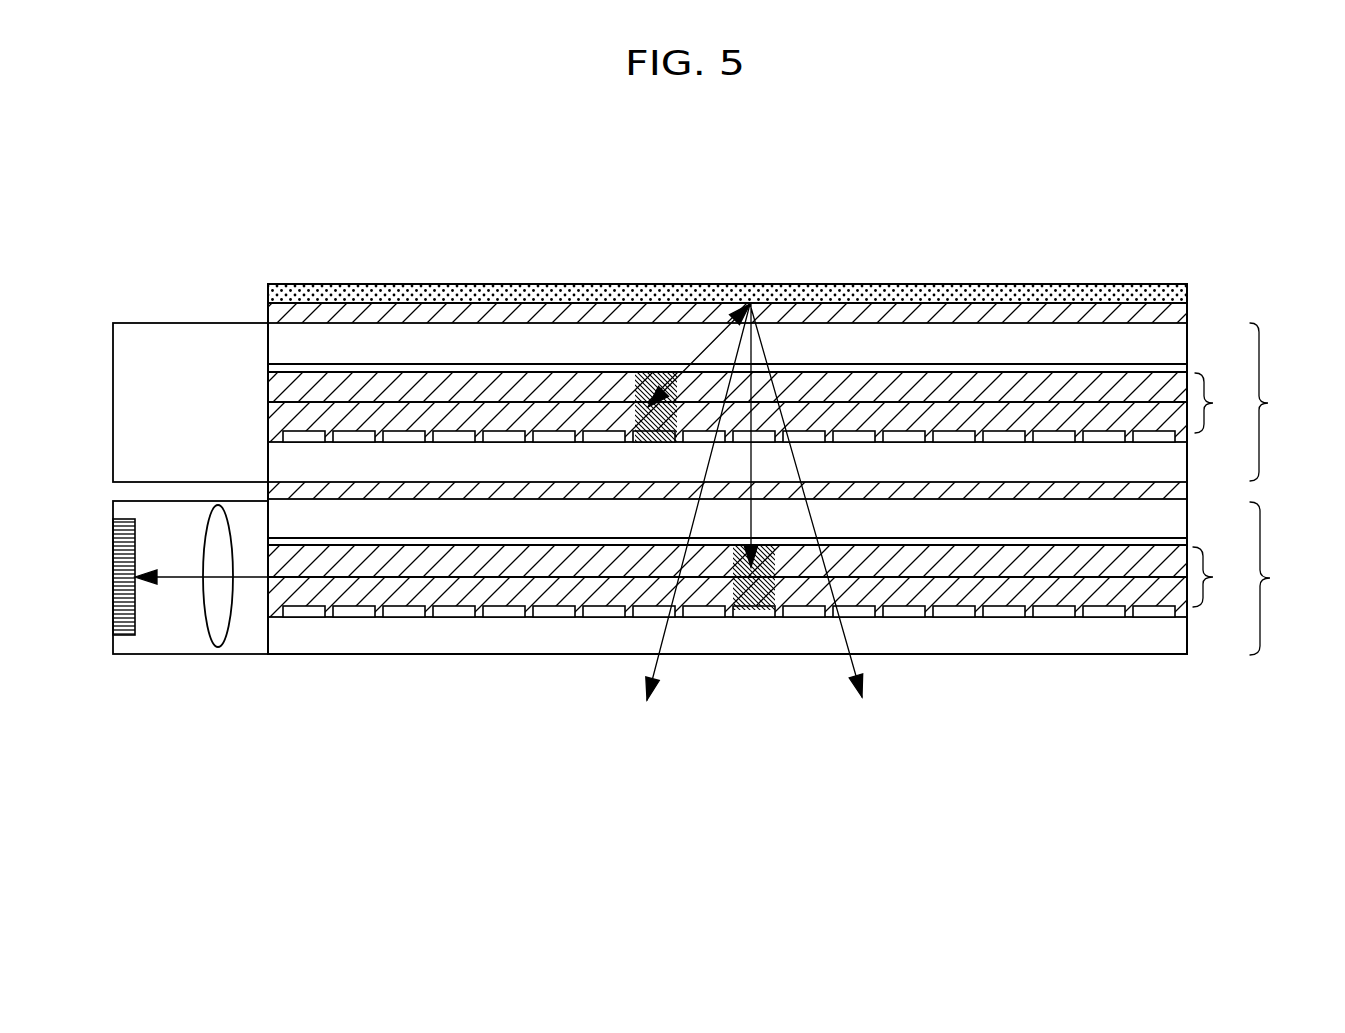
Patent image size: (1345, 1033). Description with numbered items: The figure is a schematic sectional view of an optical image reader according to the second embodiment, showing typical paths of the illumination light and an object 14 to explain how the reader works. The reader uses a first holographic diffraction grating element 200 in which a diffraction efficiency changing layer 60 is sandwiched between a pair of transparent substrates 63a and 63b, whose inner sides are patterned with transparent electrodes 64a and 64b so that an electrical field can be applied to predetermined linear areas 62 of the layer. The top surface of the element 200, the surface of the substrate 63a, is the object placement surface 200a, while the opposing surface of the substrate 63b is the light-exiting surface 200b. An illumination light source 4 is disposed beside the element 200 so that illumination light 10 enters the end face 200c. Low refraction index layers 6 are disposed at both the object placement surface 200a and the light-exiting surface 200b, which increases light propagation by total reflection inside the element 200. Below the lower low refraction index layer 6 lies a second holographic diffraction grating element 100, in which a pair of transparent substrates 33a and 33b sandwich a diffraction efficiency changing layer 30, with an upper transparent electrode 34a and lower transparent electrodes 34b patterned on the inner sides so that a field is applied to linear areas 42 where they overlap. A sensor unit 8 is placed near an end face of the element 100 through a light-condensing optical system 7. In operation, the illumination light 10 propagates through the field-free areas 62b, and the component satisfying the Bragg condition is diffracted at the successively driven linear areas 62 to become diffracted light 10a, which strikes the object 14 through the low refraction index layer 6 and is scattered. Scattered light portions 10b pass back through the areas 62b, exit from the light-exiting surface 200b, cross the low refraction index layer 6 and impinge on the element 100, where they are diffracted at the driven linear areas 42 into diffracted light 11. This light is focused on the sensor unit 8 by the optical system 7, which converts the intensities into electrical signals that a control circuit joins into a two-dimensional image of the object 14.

The illumination light source 4 is at (137, 398).
The low refraction index layer 6 is at (1175, 311).
The light-condensing optical system 7 is at (216, 626).
The sensor unit 8 is at (120, 575).
The illumination light 10 is at (351, 403).
The diffracted light 10a is at (710, 343).
The scattered light portions 10b is at (765, 347).
The diffracted light 11 is at (168, 577).
The object 14 is at (1087, 290).
The diffraction efficiency changing layer 30 is at (1222, 577).
The transparent substrate 33a is at (906, 517).
The transparent substrate 33b is at (530, 632).
The upper transparent electrode 34a is at (1000, 542).
The lower transparent electrodes 34b is at (452, 612).
The linear areas 42 is at (756, 614).
The diffraction efficiency changing layer 60 is at (1222, 403).
The linear areas 62 is at (641, 400).
The areas to which an electrical field is not applied 62b is at (523, 383).
The transparent substrate 63a is at (927, 337).
The transparent substrate 63b is at (850, 455).
The transparent electrode 64a is at (955, 367).
The transparent electrodes 64b is at (893, 437).
The holographic diffraction grating element 100 is at (1290, 578).
The holographic diffraction grating element 200 is at (1290, 402).
The object placement surface 200a is at (447, 321).
The light-exiting surface 200b is at (1118, 484).
The end face 200c is at (268, 381).